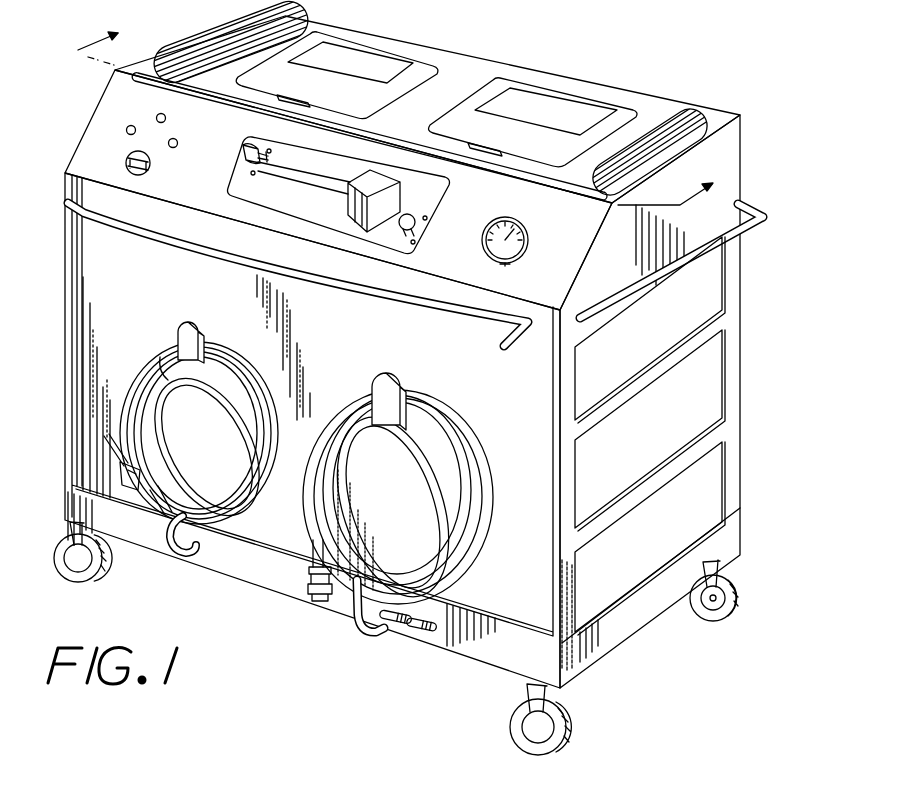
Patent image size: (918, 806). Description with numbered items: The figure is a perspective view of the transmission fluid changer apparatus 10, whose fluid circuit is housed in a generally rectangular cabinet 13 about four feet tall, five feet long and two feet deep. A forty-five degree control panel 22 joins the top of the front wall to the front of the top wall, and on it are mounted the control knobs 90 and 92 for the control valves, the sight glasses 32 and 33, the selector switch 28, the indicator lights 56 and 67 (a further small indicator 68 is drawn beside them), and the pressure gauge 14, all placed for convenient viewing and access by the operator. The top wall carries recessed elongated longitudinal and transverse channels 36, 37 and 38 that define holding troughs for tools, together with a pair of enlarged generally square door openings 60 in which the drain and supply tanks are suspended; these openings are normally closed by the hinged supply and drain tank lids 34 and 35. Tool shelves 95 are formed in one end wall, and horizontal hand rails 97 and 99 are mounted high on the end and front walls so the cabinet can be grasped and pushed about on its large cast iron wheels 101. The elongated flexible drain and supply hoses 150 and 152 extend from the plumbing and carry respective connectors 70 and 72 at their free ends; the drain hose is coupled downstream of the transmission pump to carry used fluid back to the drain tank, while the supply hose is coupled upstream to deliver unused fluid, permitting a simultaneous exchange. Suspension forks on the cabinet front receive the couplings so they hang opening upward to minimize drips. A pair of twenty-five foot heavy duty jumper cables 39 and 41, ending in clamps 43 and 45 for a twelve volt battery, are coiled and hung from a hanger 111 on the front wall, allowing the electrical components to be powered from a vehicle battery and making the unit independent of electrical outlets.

The transmission fluid changer apparatus 10 is at (617, 65).
The cabinet 13 is at (530, 600).
The pressure gauge 14 is at (517, 262).
The control panel 22 is at (541, 264).
The selector switch 28 is at (148, 170).
The sight glass 32 is at (326, 173).
The sight glass 33 is at (330, 203).
The supply tank lid 34 is at (380, 72).
The drain tank lid 35 is at (535, 103).
The recessed channel 36 is at (225, 43).
The recessed channel 37 is at (152, 85).
The recessed channel 38 is at (672, 124).
The jumper cable 39 is at (157, 348).
The jumper cable 41 is at (177, 377).
The clamp 43 is at (117, 474).
The clamp 45 is at (127, 490).
The indicator light 56 is at (166, 118).
The door opening 60 is at (488, 75).
The indicator light 67 is at (178, 143).
The indicator light 68 is at (127, 130).
The connector 70 is at (308, 575).
The connector 72 is at (309, 603).
The control knob 90 is at (248, 150).
The control knob 92 is at (410, 214).
The tool shelf 95 is at (705, 296).
The hand rail 97 is at (766, 219).
The hand rail 99 is at (62, 208).
The cast iron wheel 101 is at (104, 570).
The hanger 111 is at (197, 322).
The drain hose 150 is at (384, 642).
The supply hose 152 is at (350, 634).